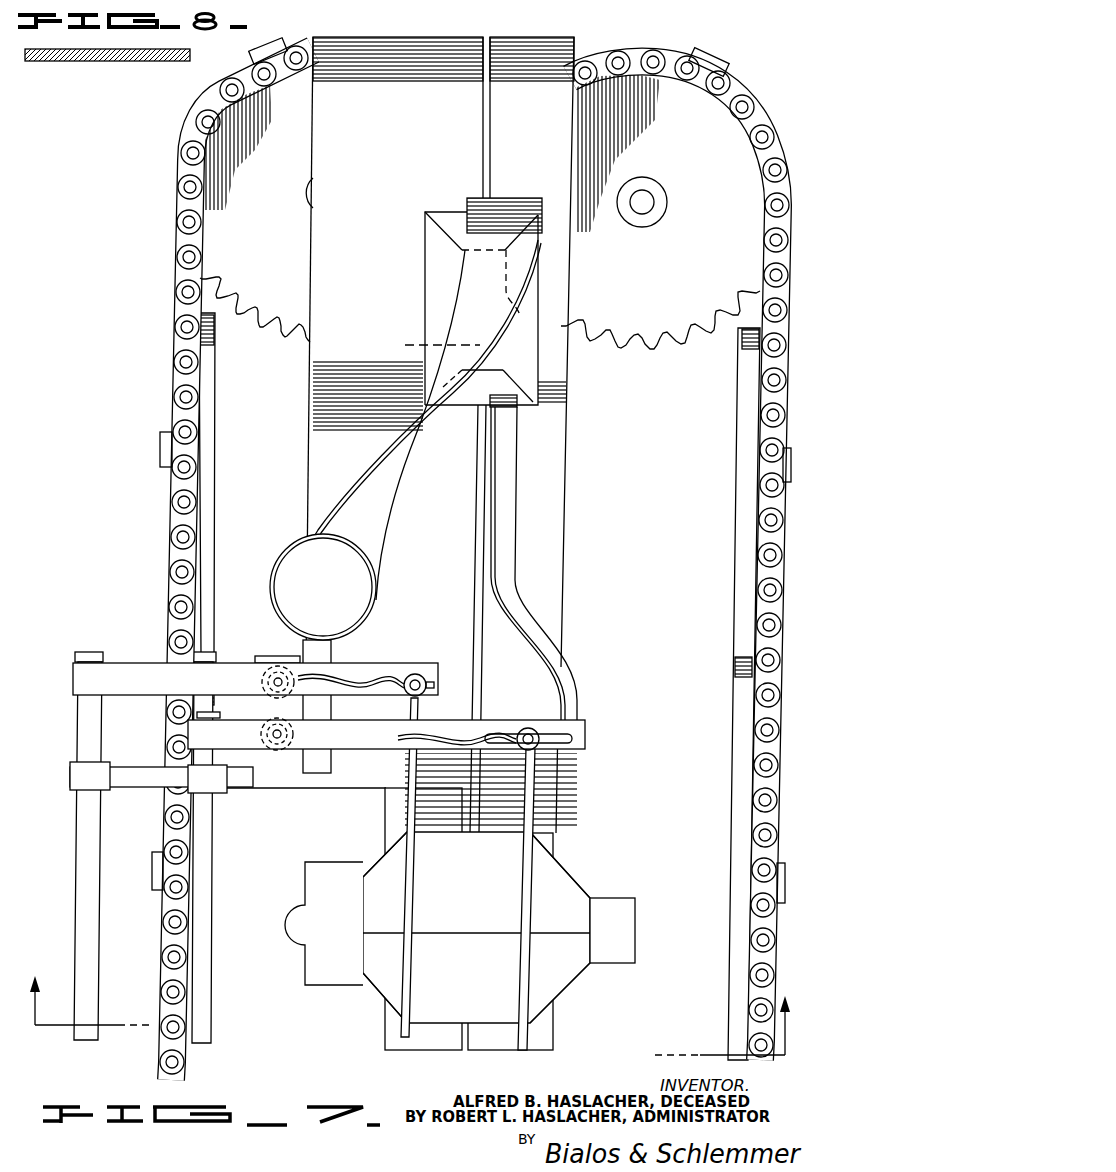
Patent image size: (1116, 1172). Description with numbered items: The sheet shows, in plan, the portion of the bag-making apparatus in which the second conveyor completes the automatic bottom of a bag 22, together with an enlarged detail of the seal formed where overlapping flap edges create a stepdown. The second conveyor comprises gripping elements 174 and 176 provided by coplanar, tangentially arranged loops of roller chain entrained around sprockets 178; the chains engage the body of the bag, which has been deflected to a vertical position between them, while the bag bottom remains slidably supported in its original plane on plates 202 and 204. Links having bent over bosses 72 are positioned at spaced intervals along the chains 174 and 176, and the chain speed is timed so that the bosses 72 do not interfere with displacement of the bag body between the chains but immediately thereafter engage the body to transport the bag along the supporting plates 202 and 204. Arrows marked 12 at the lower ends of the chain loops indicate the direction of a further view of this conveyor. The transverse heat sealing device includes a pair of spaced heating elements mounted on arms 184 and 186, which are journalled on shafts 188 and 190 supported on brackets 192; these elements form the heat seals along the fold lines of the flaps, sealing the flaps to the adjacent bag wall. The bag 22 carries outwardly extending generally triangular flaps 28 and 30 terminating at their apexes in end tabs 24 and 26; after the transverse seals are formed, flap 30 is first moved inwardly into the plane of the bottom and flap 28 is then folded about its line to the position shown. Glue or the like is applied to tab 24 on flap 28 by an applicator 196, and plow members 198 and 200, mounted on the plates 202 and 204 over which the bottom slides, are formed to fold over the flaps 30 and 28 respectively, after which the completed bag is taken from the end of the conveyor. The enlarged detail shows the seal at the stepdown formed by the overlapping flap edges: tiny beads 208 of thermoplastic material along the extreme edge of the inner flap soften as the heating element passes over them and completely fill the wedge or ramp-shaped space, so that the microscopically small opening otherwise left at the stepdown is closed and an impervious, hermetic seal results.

In FIG. 7, the section line 12- 12 is at (410, 1006).
In FIG. 7, the bag 22 is at (420, 291).
In FIG. 7, the end tab 24 is at (274, 968).
In FIG. 7, the end tab 26 is at (630, 924).
In FIG. 7, the triangular flap 28 is at (430, 246).
In FIG. 7, the triangular flap 30 is at (525, 372).
In FIG. 7, the bent over boss 72 is at (266, 47).
In FIG. 7, the gripping element 174 is at (176, 244).
In FIG. 7, the gripping element 176 is at (757, 129).
In FIG. 7, the sprocket 178 is at (286, 313).
In FIG. 7, the arm 184 is at (145, 665).
In FIG. 7, the arm 186 is at (351, 749).
In FIG. 7, the shaft 188 is at (80, 876).
In FIG. 7, the shaft 190 is at (212, 871).
In FIG. 7, the bracket 192 is at (138, 783).
In FIG. 7, the glue applicator 196 is at (384, 607).
In FIG. 7, the plow member 198 is at (520, 616).
In FIG. 7, the plow member 200 is at (369, 521).
In FIG. 7, the conveyor supporting plate 202 is at (407, 153).
In FIG. 7, the conveyor supporting plate 204 is at (542, 153).
In FIG. 8, the thermoplastic bead 208 is at (96, 50).